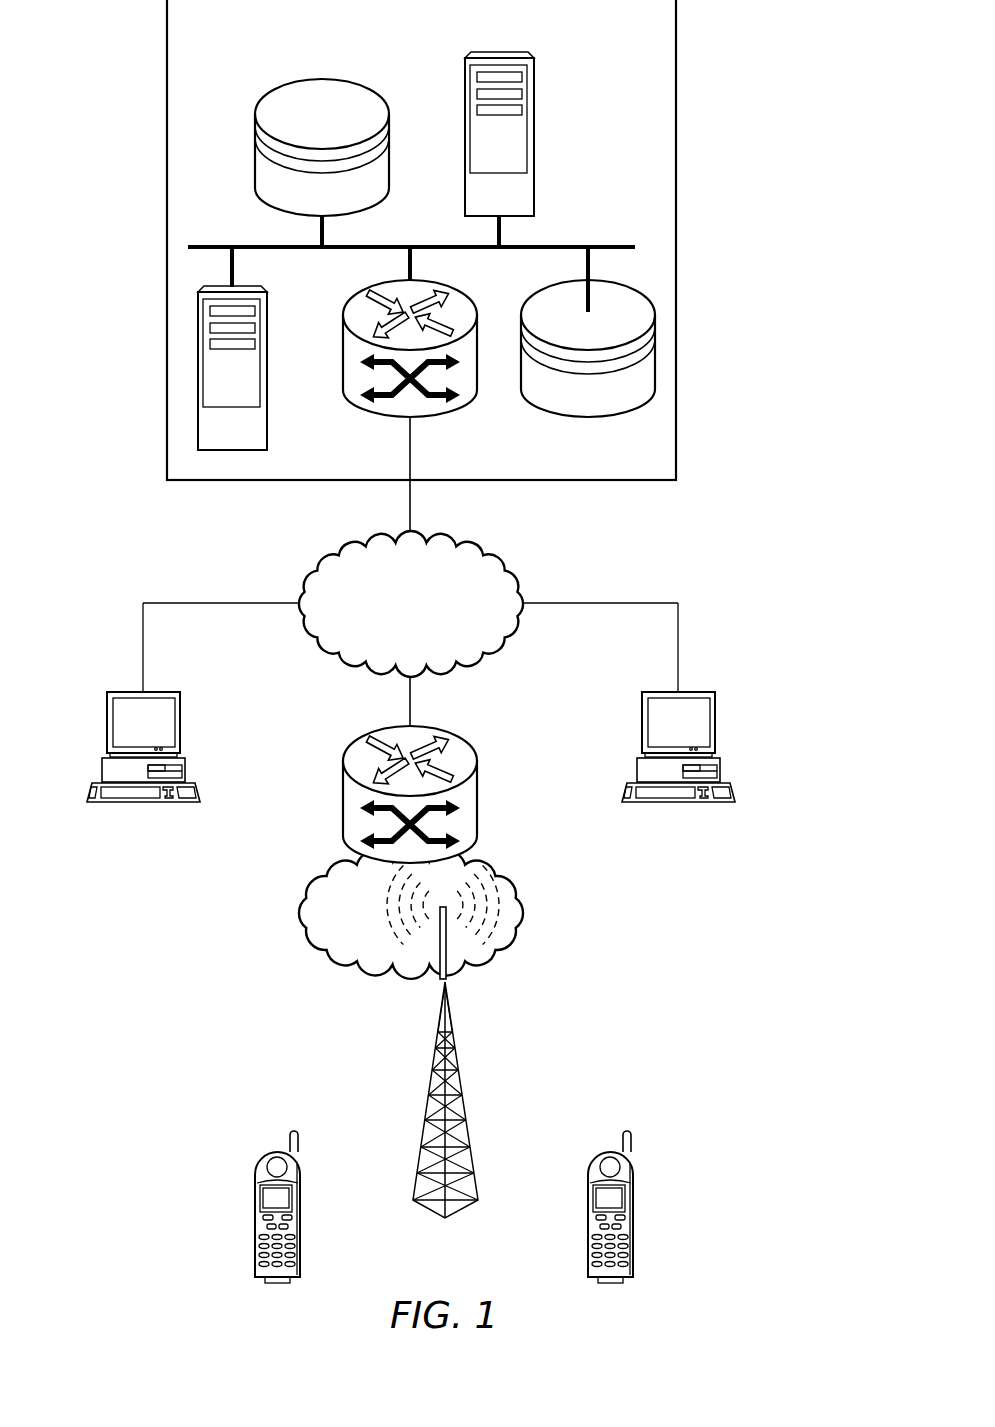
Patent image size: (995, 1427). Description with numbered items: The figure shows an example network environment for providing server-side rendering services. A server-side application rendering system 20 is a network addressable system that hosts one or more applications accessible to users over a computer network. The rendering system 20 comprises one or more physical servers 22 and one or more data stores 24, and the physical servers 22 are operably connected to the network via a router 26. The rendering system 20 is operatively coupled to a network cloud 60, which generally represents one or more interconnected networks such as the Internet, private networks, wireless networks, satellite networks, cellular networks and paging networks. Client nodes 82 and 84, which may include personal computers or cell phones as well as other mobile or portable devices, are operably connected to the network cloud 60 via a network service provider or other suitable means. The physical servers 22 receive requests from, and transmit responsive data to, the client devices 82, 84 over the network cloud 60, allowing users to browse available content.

The server-side application rendering system 20 is at (623, 85).
The physical server 22 is at (534, 135).
The data store 24 is at (254, 162).
The router 26 is at (343, 358).
The network cloud 60 is at (317, 689).
The client node 82 is at (107, 723).
The client node 84 is at (255, 1229).